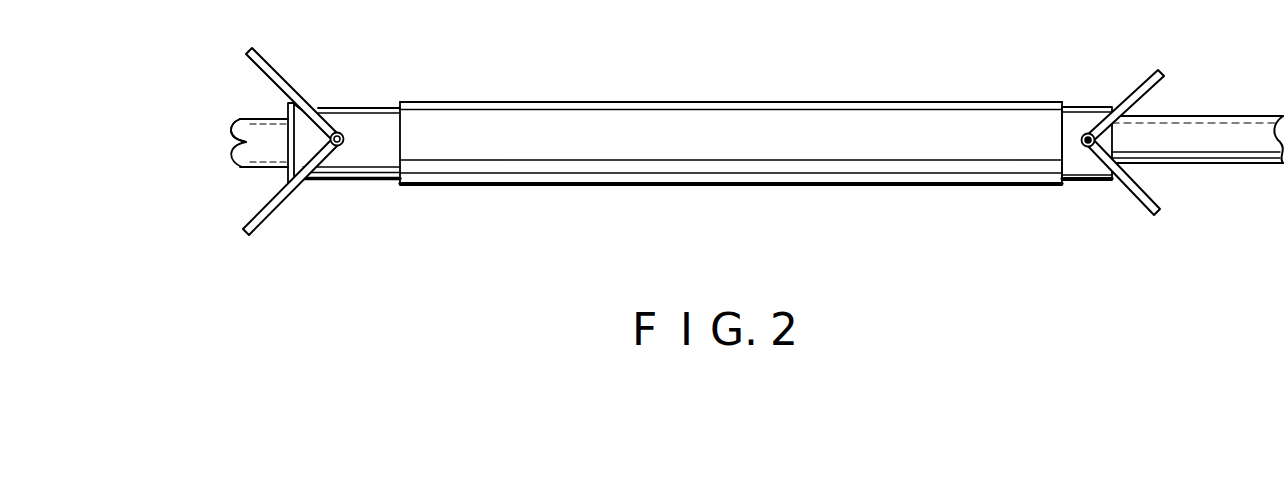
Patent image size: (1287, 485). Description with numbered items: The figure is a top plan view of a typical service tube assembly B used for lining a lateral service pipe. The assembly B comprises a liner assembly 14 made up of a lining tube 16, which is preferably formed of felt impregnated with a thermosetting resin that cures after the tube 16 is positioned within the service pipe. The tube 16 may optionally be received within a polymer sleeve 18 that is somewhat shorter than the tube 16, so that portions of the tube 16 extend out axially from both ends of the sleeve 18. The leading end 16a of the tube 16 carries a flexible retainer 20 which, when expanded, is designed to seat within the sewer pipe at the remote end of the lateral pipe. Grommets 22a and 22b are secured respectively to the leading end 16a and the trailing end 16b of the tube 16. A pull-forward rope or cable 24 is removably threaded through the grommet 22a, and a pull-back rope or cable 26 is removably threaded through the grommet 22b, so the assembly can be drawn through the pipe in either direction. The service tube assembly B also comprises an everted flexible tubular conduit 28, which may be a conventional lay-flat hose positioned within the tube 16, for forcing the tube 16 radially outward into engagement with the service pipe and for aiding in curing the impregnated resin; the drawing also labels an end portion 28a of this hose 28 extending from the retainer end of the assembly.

The service tube assembly B is at (820, 101).
The liner assembly 14 is at (418, 101).
The lining tube 16 is at (1080, 118).
The leading end of the tube 16a is at (358, 150).
The trailing end of the tube 16b is at (1088, 182).
The polymer sleeve 18 is at (640, 110).
The flexible retainer 20 is at (296, 107).
The grommet 22a is at (338, 132).
The grommet 22b is at (1095, 133).
The pull-forward rope or cable 24 is at (268, 67).
The pull-back rope or cable 26 is at (1164, 79).
The everted flexible tubular conduit 28 is at (244, 166).
The rod end 28a is at (232, 131).